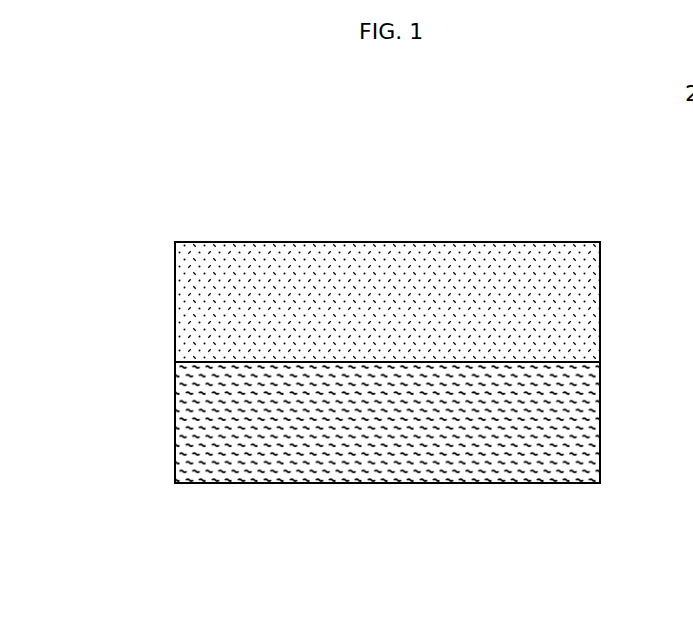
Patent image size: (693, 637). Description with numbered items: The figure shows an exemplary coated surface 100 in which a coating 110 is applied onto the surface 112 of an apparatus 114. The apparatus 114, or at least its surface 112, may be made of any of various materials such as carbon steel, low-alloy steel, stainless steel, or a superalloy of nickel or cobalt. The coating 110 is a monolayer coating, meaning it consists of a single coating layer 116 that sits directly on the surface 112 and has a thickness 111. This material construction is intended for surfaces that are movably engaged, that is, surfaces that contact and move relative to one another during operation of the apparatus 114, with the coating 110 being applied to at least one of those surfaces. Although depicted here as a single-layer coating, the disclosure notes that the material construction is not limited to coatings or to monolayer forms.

The coated surface 100 is at (178, 154).
The coating 110 is at (387, 242).
The thickness 111 is at (145, 243).
The surface 112 is at (549, 362).
The apparatus 114 is at (600, 421).
The coating layer 116 is at (600, 306).